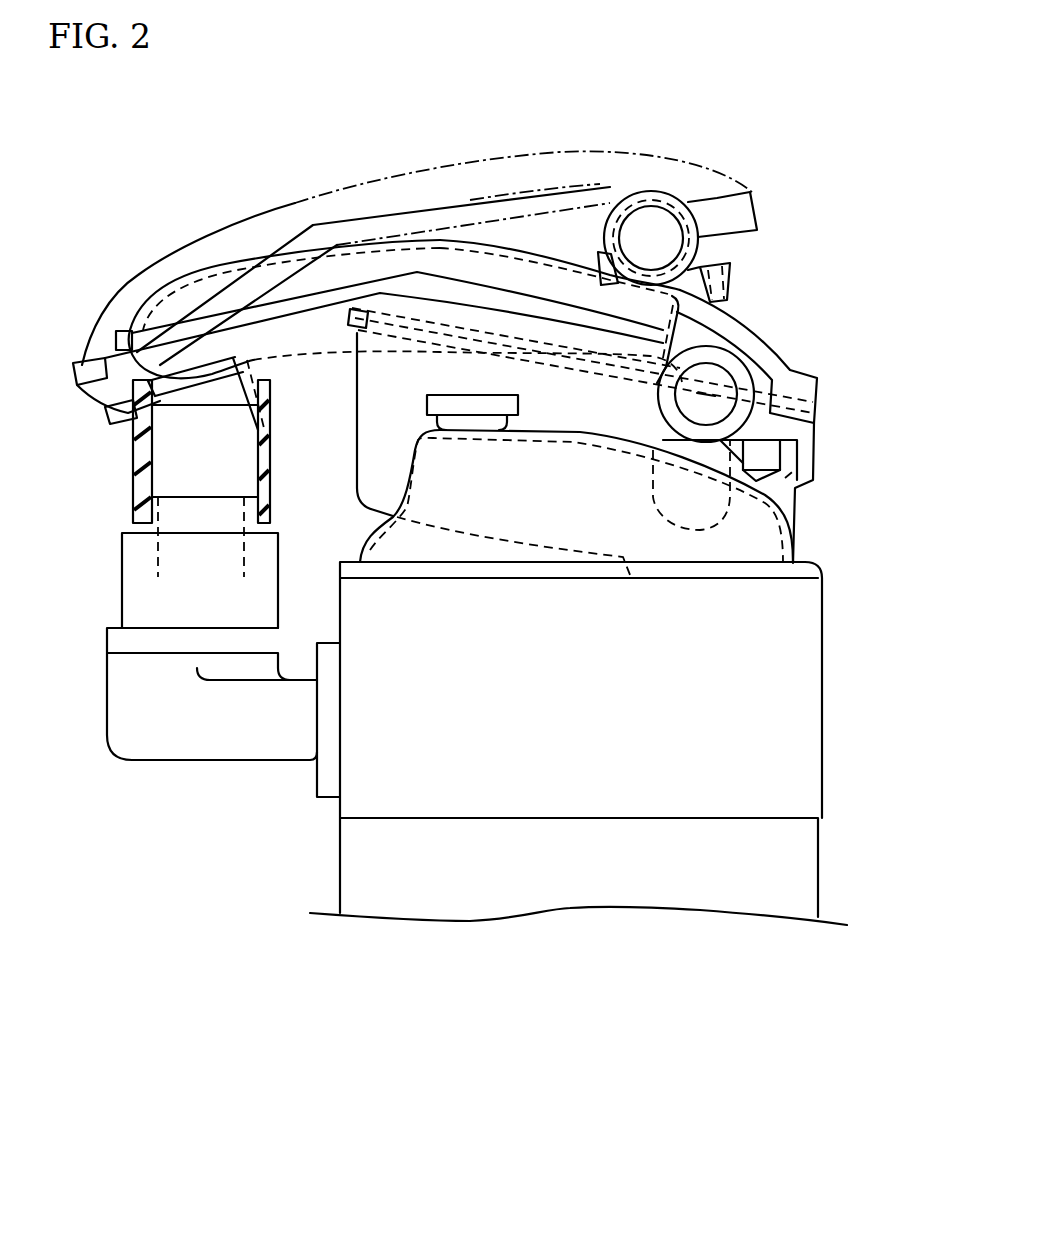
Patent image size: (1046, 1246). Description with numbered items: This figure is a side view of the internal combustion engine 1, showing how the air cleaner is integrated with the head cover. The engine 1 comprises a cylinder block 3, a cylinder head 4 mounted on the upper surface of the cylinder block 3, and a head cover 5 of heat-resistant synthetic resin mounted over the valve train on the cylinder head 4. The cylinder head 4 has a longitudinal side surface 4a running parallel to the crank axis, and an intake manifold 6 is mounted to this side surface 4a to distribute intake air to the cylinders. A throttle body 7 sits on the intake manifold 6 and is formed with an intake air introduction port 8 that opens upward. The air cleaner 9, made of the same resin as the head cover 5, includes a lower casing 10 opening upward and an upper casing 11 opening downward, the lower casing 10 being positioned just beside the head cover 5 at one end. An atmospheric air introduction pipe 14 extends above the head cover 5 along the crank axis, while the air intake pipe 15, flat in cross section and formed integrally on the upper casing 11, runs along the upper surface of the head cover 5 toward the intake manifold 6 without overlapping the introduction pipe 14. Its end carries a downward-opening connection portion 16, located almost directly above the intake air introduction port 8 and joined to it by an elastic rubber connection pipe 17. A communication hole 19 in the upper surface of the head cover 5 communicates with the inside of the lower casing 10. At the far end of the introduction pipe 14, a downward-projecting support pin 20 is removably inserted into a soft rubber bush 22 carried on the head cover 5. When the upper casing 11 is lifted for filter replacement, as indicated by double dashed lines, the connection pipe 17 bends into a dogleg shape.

The internal combustion engine 1 is at (396, 981).
The cylinder block 3 is at (608, 906).
The cylinder head 4 is at (433, 812).
The longitudinal side surface 4a is at (338, 806).
The head cover 5 is at (702, 571).
The intake manifold 6 is at (216, 788).
The throttle body 7 is at (128, 615).
The intake air introduction port 8 is at (186, 511).
The air cleaner 9 is at (838, 346).
The lower casing 10 is at (797, 457).
The upper casing 11 is at (728, 336).
The atmospheric air introduction pipe 14 is at (740, 360).
The air intake pipe 15 is at (325, 277).
The connection portion 16 is at (137, 422).
The connection pipe 17 is at (137, 447).
The communication hole 19 is at (662, 512).
The support pin 20 is at (797, 473).
The bush 22 is at (795, 492).